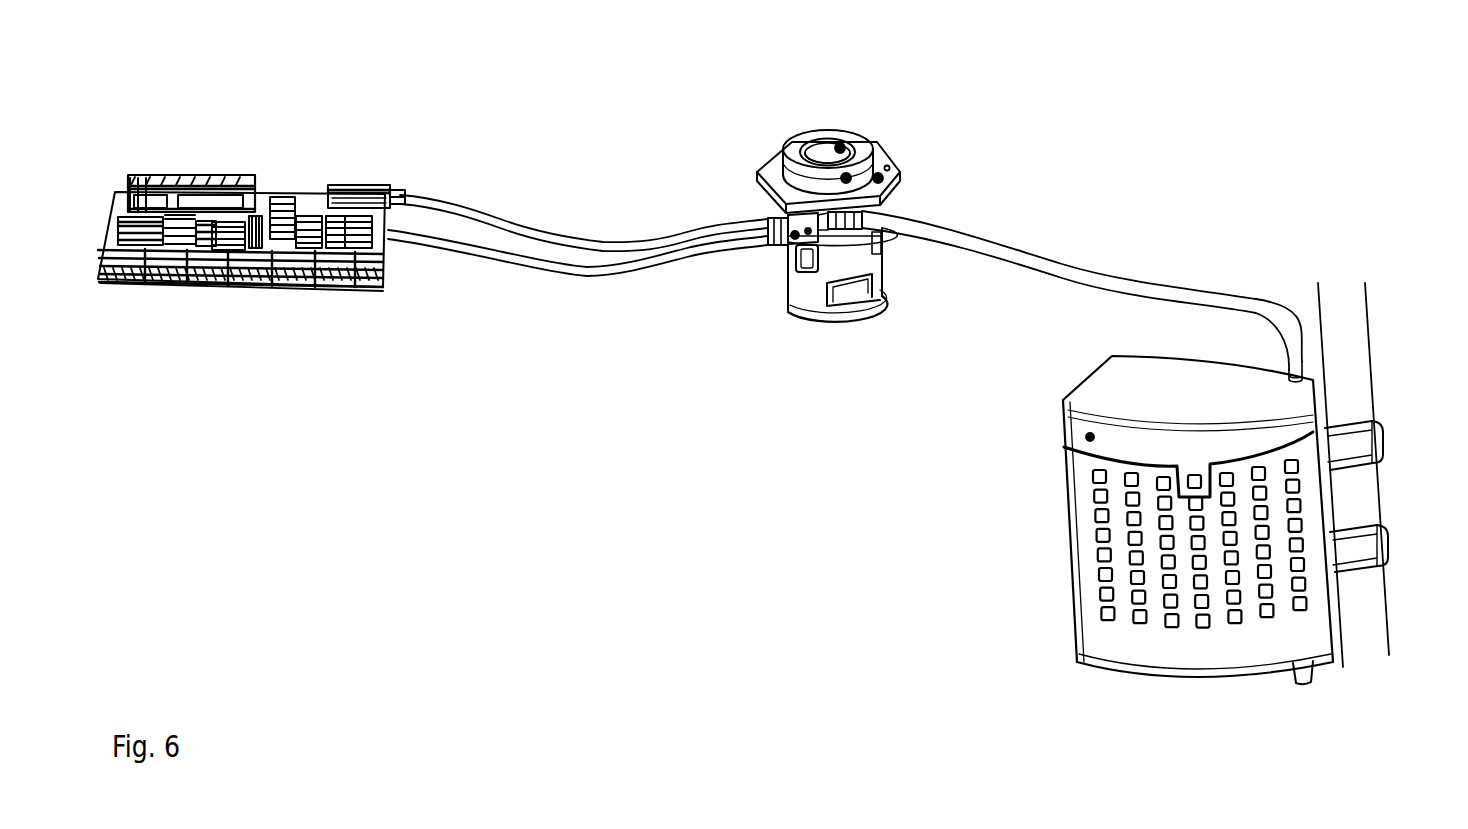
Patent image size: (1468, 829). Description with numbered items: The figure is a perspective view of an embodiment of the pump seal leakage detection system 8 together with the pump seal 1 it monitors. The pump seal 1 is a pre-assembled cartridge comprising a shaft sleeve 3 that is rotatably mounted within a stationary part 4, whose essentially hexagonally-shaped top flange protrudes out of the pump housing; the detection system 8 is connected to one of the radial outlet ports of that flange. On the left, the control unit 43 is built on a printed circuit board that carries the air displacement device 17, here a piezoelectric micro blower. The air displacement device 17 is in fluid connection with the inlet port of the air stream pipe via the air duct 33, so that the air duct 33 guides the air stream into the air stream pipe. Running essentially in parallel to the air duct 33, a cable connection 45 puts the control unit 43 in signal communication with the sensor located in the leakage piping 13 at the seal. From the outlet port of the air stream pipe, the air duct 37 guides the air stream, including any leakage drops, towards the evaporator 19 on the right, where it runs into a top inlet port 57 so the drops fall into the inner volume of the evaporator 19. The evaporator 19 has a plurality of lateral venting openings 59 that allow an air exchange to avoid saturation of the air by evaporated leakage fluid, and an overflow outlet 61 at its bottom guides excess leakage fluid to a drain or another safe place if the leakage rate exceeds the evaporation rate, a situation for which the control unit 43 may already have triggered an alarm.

The pump seal 1 is at (926, 287).
The shaft sleeve 3 is at (821, 146).
The stationary part 4 is at (770, 167).
The pump seal leakage detection system 8 is at (1103, 100).
The leakage piping 13 is at (788, 245).
The air displacement device 17 is at (337, 198).
The evaporator 19 is at (1088, 439).
The air duct 33 is at (537, 223).
The air duct 37 is at (1073, 262).
The control unit 43 is at (310, 197).
The cable connection 45 is at (507, 260).
The top inlet port 57 is at (1300, 371).
The lateral venting openings 59 is at (1098, 560).
The overflow outlet 61 is at (1297, 677).